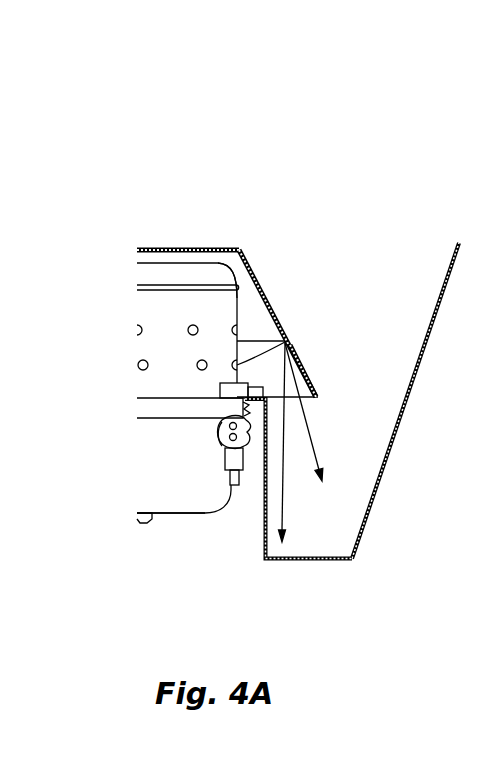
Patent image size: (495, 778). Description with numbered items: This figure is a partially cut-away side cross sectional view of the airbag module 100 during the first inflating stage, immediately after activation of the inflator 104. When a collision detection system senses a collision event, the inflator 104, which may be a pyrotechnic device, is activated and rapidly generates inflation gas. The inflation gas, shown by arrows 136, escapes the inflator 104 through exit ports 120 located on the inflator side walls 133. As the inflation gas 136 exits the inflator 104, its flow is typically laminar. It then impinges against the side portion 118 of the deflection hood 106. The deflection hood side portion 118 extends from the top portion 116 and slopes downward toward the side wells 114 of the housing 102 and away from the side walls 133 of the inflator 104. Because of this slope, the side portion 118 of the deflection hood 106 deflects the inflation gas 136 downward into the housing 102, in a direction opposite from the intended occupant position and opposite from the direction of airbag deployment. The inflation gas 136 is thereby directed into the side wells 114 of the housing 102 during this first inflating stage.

The airbag module 100 is at (201, 180).
The housing 102 is at (313, 574).
The inflator 104 is at (170, 528).
The deflection hood 106 is at (259, 257).
The side wells 114 is at (340, 515).
The top portion 116 is at (158, 247).
The side portion 118 is at (308, 370).
The exit ports 120 is at (287, 340).
The inflator side walls 133 is at (238, 298).
The inflation gas 136 is at (320, 447).